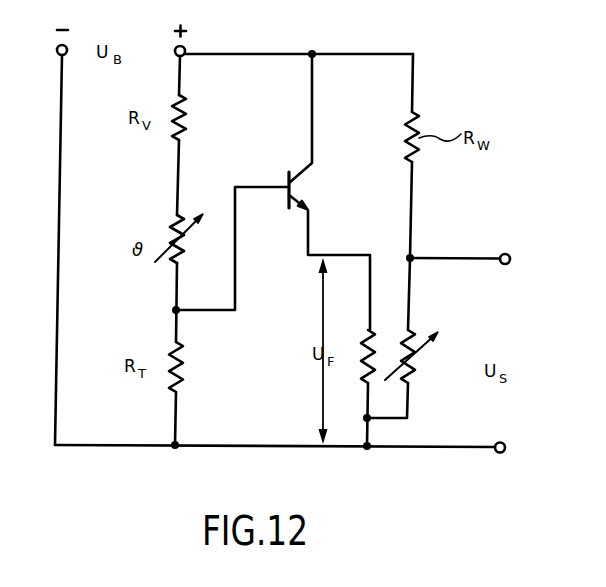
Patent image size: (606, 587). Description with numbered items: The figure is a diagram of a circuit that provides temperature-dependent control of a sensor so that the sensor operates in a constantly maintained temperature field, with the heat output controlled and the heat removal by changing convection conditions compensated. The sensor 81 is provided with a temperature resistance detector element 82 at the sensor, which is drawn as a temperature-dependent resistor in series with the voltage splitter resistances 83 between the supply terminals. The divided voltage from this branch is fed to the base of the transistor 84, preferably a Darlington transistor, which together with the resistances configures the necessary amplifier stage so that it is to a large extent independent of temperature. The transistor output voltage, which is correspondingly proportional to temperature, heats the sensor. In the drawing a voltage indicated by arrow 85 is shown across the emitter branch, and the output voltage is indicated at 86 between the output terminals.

The sensor 81 is at (406, 352).
The temperature resistance detector element 82 is at (166, 262).
The voltage splitter resistances 83 is at (188, 116).
The transistor 84 is at (302, 187).
The voltage U_F 85 is at (317, 380).
The output voltage U_S 86 is at (508, 342).